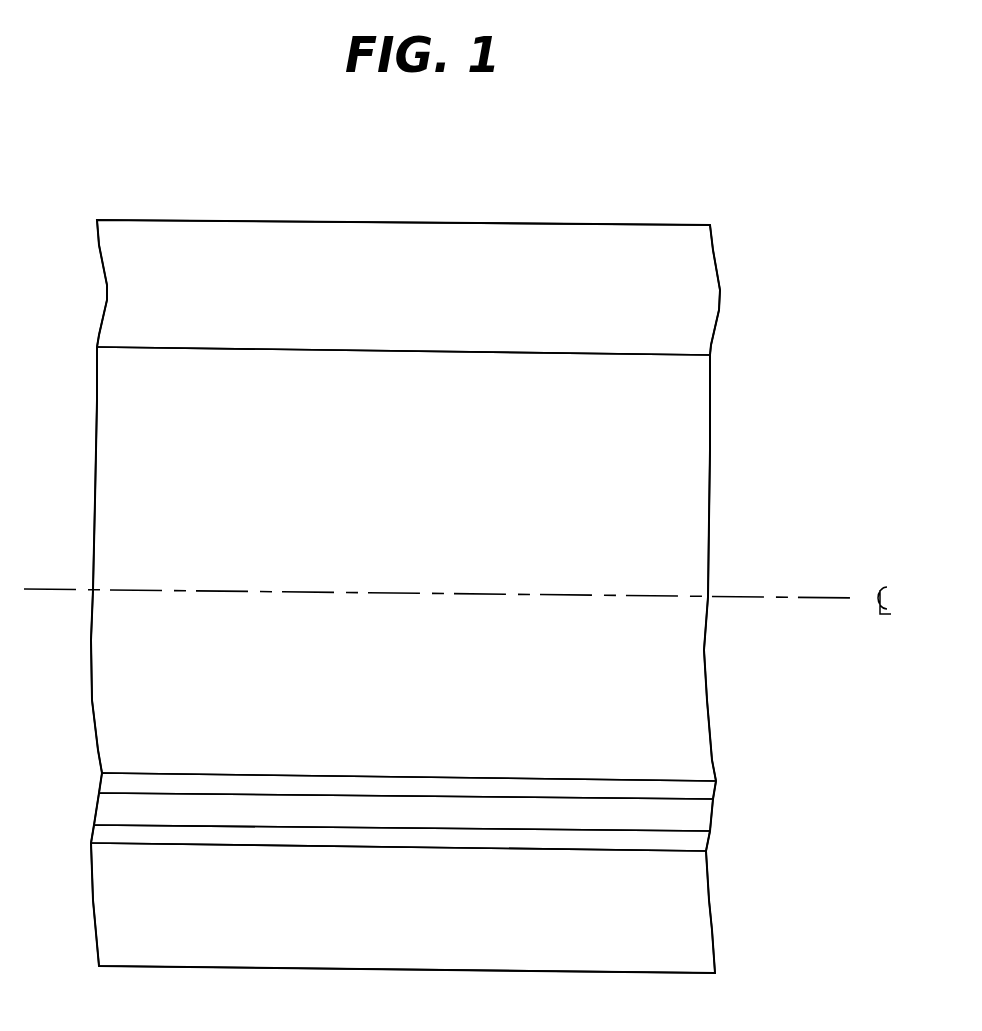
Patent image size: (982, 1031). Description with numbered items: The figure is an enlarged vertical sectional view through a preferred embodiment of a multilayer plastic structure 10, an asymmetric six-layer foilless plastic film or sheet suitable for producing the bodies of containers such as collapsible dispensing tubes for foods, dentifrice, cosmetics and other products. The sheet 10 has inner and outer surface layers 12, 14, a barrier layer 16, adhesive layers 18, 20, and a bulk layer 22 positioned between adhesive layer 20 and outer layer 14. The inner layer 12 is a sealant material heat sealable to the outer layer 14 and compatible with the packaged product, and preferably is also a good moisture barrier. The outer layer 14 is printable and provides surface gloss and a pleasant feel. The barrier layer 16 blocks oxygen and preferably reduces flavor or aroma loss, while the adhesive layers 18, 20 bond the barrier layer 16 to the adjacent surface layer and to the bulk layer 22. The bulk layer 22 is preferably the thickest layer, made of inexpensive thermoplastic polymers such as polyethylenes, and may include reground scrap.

The multilayer plastic structure 10 is at (190, 192).
The inner surface layer 12 is at (700, 924).
The outer surface layer 14 is at (700, 297).
The barrier layer 16 is at (700, 815).
The adhesive layer 18 is at (700, 843).
The adhesive layer 20 is at (708, 792).
The bulk layer 22 is at (698, 564).